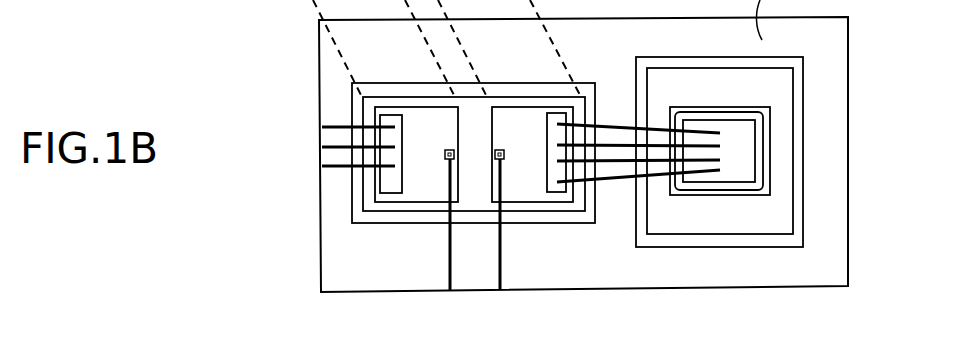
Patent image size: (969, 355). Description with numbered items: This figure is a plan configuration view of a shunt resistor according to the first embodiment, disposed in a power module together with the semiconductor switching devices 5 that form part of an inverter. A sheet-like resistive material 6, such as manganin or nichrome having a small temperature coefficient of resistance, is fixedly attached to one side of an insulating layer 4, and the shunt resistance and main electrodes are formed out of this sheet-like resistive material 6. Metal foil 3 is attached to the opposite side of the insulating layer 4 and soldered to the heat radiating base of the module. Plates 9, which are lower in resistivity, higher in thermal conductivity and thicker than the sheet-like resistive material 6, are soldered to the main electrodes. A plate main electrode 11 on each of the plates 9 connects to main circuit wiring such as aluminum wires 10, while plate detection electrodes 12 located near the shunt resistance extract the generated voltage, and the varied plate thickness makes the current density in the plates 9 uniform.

The metal foil 3 is at (778, 88).
The insulating layer 4 is at (352, 96).
The semiconductor switching devices 5 is at (770, 193).
The sheet-like resistive material 6 is at (381, 115).
The plates 9 is at (530, 188).
The aluminum wires 10 is at (619, 178).
The plate main electrode 11 is at (555, 189).
The plate detection electrodes 12 is at (496, 153).